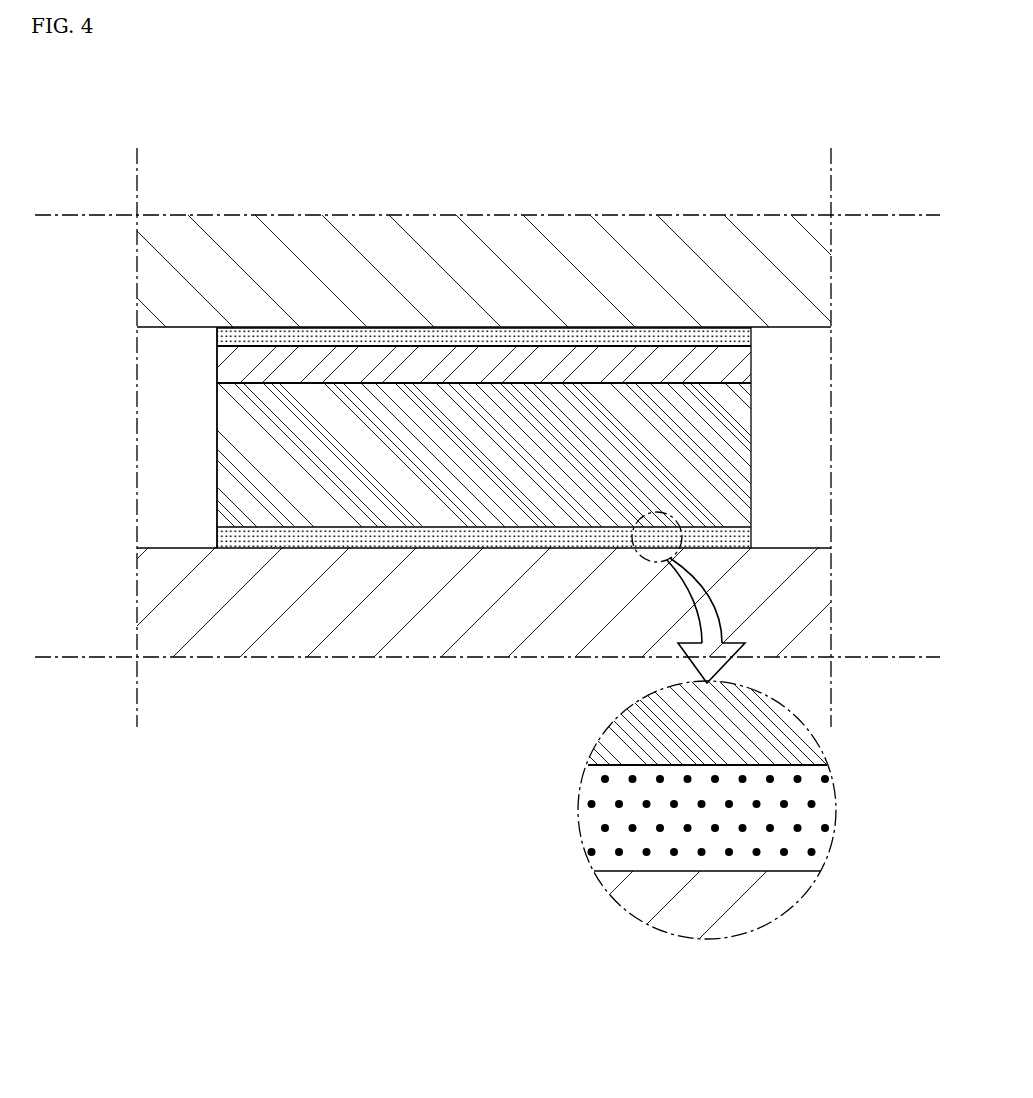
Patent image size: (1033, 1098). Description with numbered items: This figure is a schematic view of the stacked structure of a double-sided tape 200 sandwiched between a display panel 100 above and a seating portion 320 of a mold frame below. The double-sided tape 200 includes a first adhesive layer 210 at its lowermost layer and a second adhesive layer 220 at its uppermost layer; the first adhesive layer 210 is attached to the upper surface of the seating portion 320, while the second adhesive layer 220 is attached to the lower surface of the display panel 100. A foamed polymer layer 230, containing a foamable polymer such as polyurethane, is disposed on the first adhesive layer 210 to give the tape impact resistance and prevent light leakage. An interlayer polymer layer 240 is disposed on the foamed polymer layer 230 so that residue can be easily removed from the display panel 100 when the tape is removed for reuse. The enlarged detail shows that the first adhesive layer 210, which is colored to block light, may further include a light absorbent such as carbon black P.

The display panel 100 is at (495, 278).
The double-sided tape 200 is at (894, 333).
The first adhesive layer 210 is at (751, 533).
The second adhesive layer 220 is at (751, 338).
The foamed polymer layer 230 is at (751, 476).
The interlayer polymer layer 240 is at (751, 371).
The seating portion 320 is at (495, 618).
The carbon black P is at (812, 804).